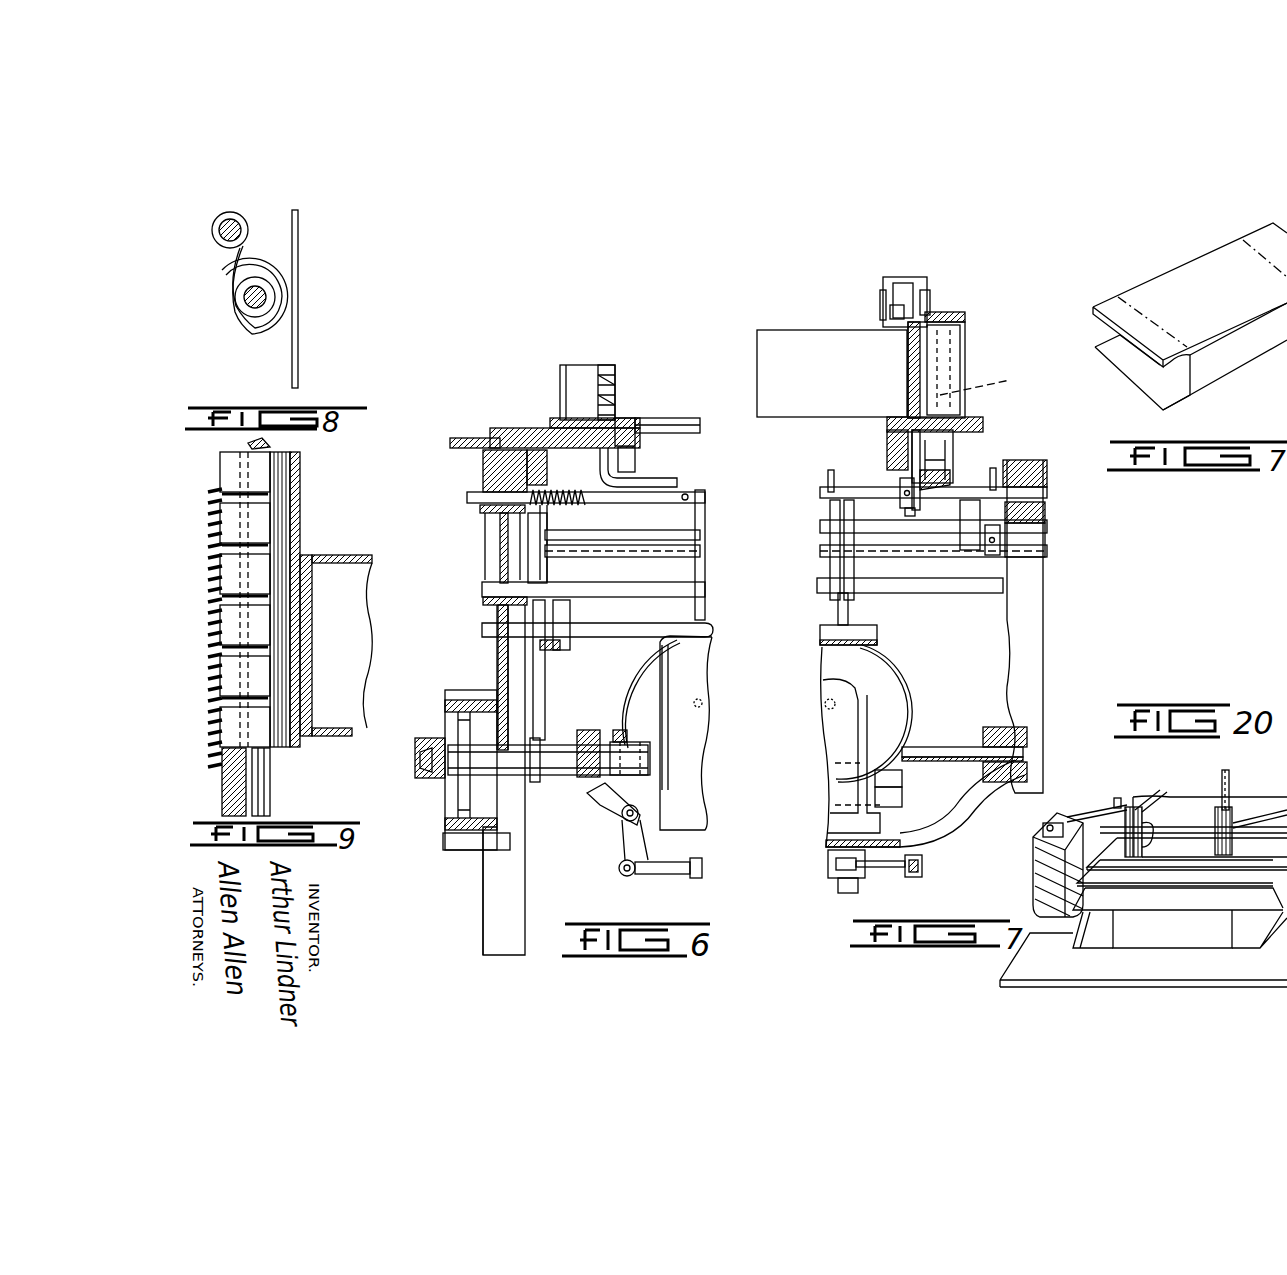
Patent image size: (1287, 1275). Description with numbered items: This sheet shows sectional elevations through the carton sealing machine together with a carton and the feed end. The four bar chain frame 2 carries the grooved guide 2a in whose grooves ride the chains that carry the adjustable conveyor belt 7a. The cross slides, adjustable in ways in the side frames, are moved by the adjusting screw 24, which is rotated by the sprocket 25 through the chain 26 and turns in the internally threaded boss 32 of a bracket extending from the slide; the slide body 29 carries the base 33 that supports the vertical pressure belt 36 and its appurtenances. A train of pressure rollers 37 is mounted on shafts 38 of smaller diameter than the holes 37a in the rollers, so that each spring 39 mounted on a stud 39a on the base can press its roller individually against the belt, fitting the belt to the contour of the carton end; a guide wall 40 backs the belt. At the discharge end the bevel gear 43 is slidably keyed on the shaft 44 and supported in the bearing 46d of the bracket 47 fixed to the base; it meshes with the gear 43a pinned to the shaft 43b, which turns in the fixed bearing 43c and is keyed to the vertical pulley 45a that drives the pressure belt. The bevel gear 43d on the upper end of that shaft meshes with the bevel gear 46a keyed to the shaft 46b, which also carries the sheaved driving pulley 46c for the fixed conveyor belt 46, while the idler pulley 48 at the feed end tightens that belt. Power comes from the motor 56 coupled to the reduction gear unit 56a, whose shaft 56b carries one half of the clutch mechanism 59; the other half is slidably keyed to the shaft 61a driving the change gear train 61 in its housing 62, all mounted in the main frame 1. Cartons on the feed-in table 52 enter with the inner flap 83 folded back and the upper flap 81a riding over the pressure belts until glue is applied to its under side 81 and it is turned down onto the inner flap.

In FIG. 6, the frame plate 1 is at (495, 655).
In FIG. 7, the frame plate 1 is at (1030, 628).
In FIG. 6, the four bar chain frame 2 is at (636, 440).
In FIG. 7, the four bar chain frame 2 is at (887, 452).
In FIG. 6, the grooved guide 2a is at (640, 418).
In FIG. 7, the grooved guide 2a is at (887, 418).
In FIG. 6, the adjustable conveyor belt 7a is at (618, 420).
In FIG. 7, the adjustable conveyor belt 7a is at (896, 416).
In FIG. 6, the adjusting screw 24 is at (660, 490).
In FIG. 6, the sprocket 25 is at (700, 514).
In FIG. 6, the chain 26 is at (700, 552).
In FIG. 6, the bar 29 is at (485, 438).
In FIG. 6, the internally threaded boss 32 is at (565, 508).
In FIG. 6, the base 33 is at (556, 428).
In FIG. 7, the base 33 is at (965, 432).
In FIG. 6, the pressure belt 36 is at (560, 368).
In FIG. 7, the pressure belt 36 is at (965, 378).
In FIG. 20, the pressure belt 36 is at (1040, 872).
In FIG. 8, the pressure roller 37 is at (240, 330).
In FIG. 9, the pressure roller 37 is at (236, 472).
In FIG. 6, the pressure roller 37 is at (605, 365).
In FIG. 8, the hole 37a is at (272, 308).
In FIG. 9, the hole 37a is at (240, 520).
In FIG. 8, the shaft 38 is at (268, 293).
In FIG. 9, the shaft 38 is at (262, 440).
In FIG. 8, the spring 39 is at (250, 250).
In FIG. 9, the spring 39 is at (214, 760).
In FIG. 8, the stud 39a is at (243, 231).
In FIG. 9, the stud 39a is at (232, 802).
In FIG. 9, the bracket 40 is at (312, 632).
In FIG. 7, the bevel gear 43 is at (900, 490).
In FIG. 7, the gear 43a is at (955, 470).
In FIG. 7, the shaft 43b is at (998, 378).
In FIG. 7, the fixed bearing 43c is at (920, 458).
In FIG. 7, the bevel gear 43d is at (945, 314).
In FIG. 7, the shaft 44 is at (830, 495).
In FIG. 7, the vertical pulley 45a is at (952, 350).
In FIG. 7, the fixed conveyor belt 46 is at (912, 278).
In FIG. 20, the fixed conveyor belt 46 is at (1140, 800).
In FIG. 7, the bevel gear 46a is at (930, 298).
In FIG. 7, the shaft 46b is at (882, 300).
In FIG. 7, the driving pulley 46c is at (890, 312).
In FIG. 7, the bearing 46d is at (905, 514).
In FIG. 7, the bracket 47 is at (952, 455).
In FIG. 20, the idler pulley 48 is at (1110, 815).
In FIG. 20, the feed-in table 52 is at (1085, 985).
In FIG. 6, the motor 56 is at (680, 652).
In FIG. 7, the motor 56 is at (862, 660).
In FIG. 6, the reduction gear unit 56a is at (678, 702).
In FIG. 7, the reduction gear unit 56a is at (850, 715).
In FIG. 6, the reduction gear shaft 56b is at (612, 735).
In FIG. 7, the reduction gear shaft 56b is at (910, 750).
In FIG. 6, the clutch mechanism 59 is at (600, 810).
In FIG. 7, the clutch mechanism 59 is at (858, 870).
In FIG. 6, the change gear train 61 is at (462, 720).
In FIG. 6, the shaft 61a is at (560, 770).
In FIG. 6, the housing 62 is at (455, 848).
In FIG. 7A, the under side of flap 81 is at (1150, 395).
In FIG. 7A, the upper flap 81a is at (1110, 303).
In FIG. 20, the upper flap 81a is at (1085, 915).
In FIG. 7A, the inner flap 83 is at (1180, 400).
In FIG. 20, the inner flap 83 is at (1100, 935).